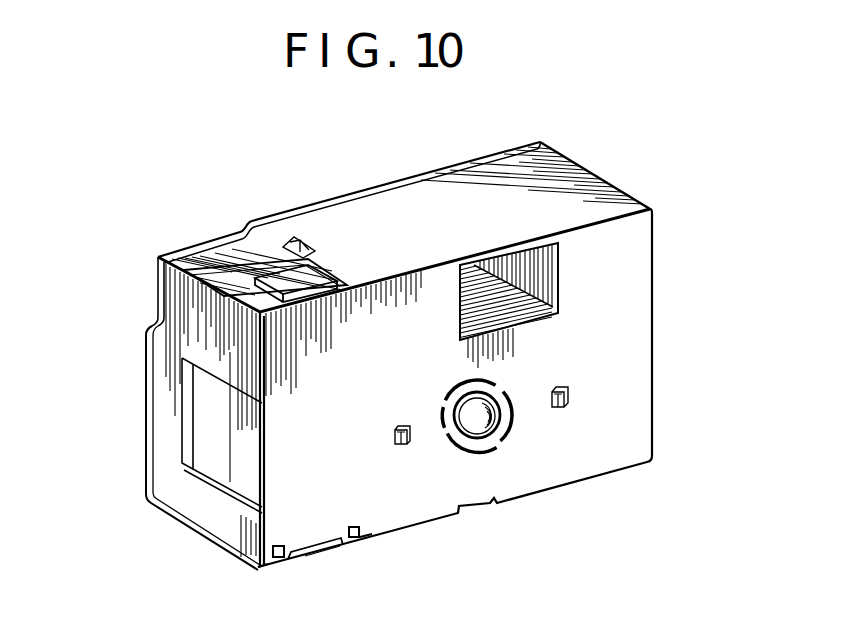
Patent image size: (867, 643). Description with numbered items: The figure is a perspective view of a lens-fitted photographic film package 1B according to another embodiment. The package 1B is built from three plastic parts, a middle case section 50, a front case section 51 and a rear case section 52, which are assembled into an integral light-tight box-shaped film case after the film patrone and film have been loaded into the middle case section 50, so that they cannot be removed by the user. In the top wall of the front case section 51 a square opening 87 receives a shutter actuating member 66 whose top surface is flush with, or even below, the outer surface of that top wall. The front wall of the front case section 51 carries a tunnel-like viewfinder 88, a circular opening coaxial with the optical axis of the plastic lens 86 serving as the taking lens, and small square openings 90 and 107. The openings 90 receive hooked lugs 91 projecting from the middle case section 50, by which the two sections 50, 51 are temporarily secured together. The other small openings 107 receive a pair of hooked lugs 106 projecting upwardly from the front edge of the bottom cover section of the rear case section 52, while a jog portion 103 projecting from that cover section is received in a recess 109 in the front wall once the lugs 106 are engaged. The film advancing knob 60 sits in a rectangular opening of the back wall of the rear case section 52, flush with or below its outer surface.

The lens-fitted photographic film package 1B is at (623, 175).
The middle case section 50 is at (165, 497).
The front case section 51 is at (645, 388).
The rear case section 52 is at (145, 412).
The film advancing knob 60 is at (199, 237).
The shutter actuating member 66 is at (277, 270).
The plastic lens 86 is at (488, 440).
The square opening 87 is at (340, 284).
The tunnel-like viewfinder 88 is at (556, 282).
The small square openings 90 is at (401, 425).
The hooked lugs 91 is at (400, 446).
The jog portion 103 is at (310, 554).
The hooked lugs 106 is at (279, 546).
The small square openings 107 is at (270, 568).
The recess 109 is at (329, 541).